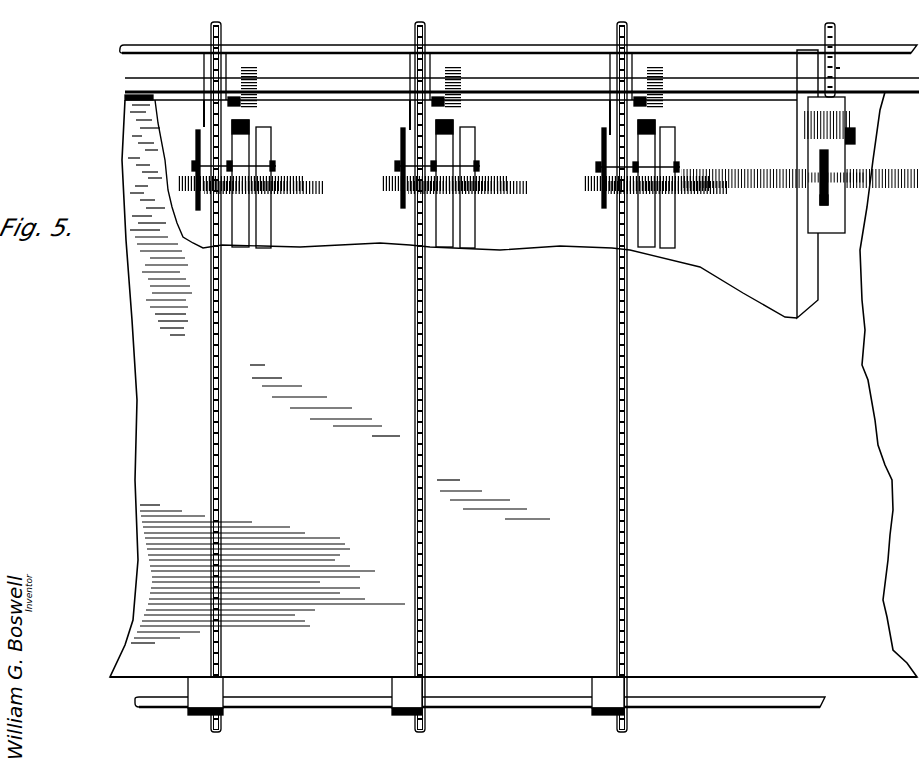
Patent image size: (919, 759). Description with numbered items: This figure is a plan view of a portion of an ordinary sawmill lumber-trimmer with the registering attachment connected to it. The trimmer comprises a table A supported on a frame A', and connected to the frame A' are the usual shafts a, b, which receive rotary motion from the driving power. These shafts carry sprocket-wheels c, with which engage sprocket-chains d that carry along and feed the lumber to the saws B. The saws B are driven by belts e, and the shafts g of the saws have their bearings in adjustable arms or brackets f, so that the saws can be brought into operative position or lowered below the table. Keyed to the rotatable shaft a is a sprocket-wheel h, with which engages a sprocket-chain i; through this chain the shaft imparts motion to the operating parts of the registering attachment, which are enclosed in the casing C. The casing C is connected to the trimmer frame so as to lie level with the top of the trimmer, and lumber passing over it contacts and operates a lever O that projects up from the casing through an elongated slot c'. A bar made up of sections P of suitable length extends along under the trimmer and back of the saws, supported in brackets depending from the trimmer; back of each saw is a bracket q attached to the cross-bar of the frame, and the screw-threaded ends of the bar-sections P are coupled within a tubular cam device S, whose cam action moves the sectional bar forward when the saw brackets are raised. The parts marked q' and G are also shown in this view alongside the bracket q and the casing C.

The table A is at (513, 384).
The frame A' is at (522, 75).
The shaft a is at (518, 39).
The shaft b is at (513, 702).
The sprocket-wheels c is at (424, 376).
The elongated slot c' is at (803, 177).
The casing C is at (832, 184).
The sprocket-chains d is at (636, 314).
The belts e is at (244, 128).
The adjustable arms or brackets f is at (271, 203).
The shafts of the saws g is at (276, 166).
The saws B is at (196, 196).
The bar-sections P is at (191, 105).
The bracket q is at (190, 120).
The guide q' is at (495, 117).
The tubular cam device S is at (250, 72).
The guide post G is at (858, 126).
The lever O is at (820, 200).
The sprocket-wheel h is at (835, 30).
The sprocket-chain i is at (837, 68).